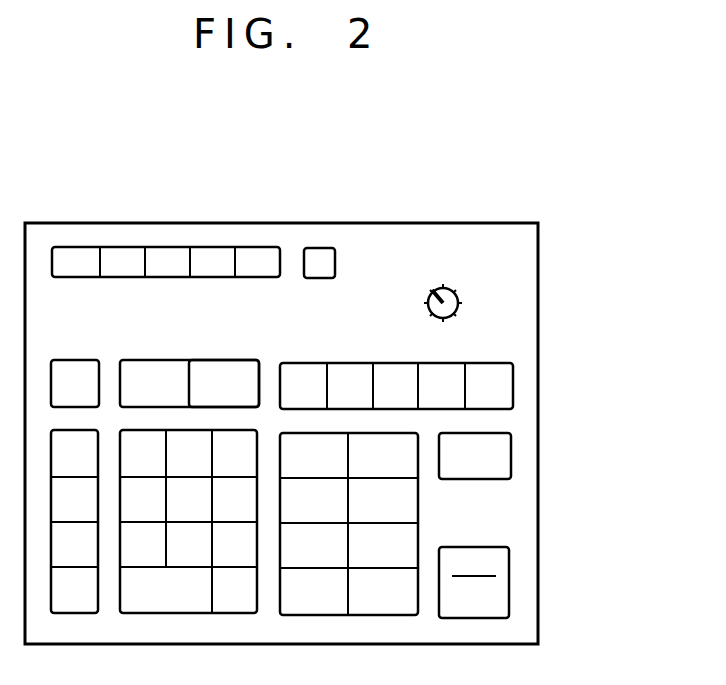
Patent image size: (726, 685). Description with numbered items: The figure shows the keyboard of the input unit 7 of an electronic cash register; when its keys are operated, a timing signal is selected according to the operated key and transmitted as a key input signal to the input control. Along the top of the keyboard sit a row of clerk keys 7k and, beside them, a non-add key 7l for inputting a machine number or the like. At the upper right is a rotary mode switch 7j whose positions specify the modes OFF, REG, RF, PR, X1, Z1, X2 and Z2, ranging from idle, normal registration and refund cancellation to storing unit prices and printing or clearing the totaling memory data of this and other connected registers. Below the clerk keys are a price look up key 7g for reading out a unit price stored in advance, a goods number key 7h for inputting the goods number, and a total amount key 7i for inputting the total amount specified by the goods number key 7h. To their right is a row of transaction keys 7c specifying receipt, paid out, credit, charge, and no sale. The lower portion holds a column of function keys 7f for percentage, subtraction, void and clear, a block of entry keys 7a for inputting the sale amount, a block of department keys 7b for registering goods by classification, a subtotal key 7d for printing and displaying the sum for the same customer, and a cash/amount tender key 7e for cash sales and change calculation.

The input unit 7 is at (245, 218).
The clerk key 7k is at (154, 247).
The non-add key 7l is at (321, 248).
The mode switch 7j is at (497, 313).
The price look up key 7g is at (73, 360).
The goods number key 7h is at (150, 360).
The total amount key 7i is at (218, 360).
The transaction keys 7c is at (513, 388).
The subtotal key 7d is at (511, 460).
The cash/amount tender key 7e is at (509, 590).
The function keys 7f is at (68, 613).
The entry keys 7a is at (178, 613).
The department keys 7b is at (338, 615).